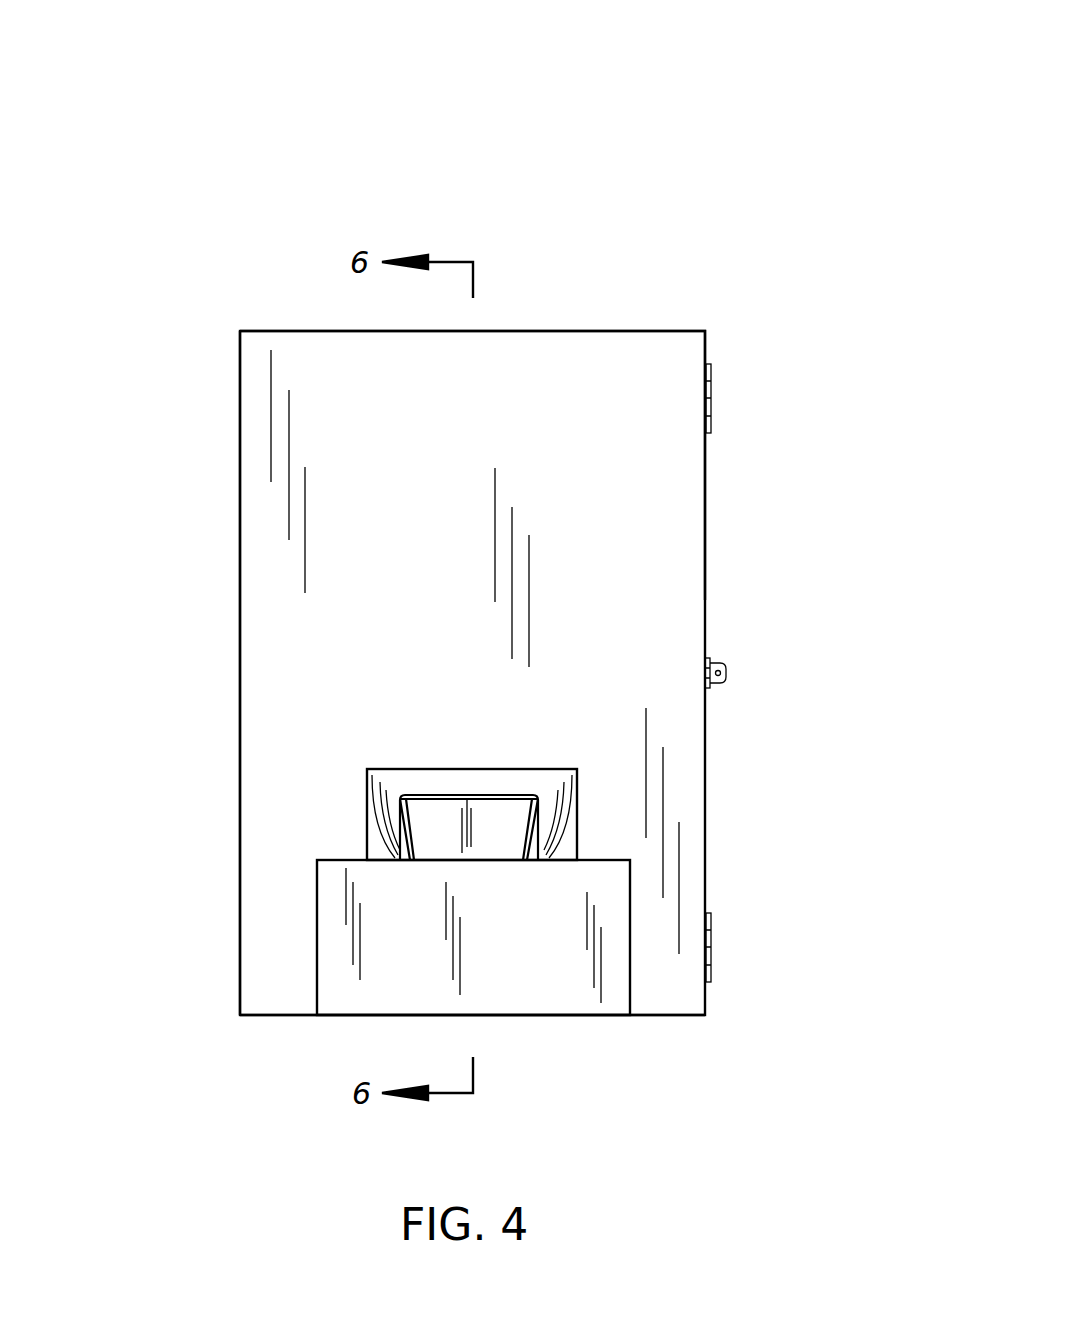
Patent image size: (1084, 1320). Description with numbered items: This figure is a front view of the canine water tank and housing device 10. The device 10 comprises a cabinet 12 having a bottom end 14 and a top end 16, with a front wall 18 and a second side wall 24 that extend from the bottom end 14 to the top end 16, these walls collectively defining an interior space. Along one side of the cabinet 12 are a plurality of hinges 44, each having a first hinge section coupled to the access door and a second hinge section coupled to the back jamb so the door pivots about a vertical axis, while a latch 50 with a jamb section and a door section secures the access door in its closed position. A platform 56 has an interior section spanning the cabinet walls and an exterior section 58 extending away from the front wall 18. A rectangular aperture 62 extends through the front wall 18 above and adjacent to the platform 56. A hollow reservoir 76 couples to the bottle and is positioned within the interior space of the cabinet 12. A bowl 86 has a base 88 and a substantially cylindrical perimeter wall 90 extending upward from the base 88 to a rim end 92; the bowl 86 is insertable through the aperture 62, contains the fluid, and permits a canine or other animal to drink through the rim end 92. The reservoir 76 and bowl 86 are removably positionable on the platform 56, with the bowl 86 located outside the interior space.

The canine water tank and housing device 10 is at (665, 78).
The cabinet 12 is at (685, 258).
The bottom end 14 is at (680, 1063).
The top end 16 is at (251, 250).
The front wall 18 is at (285, 467).
The second side wall 24 is at (183, 404).
The hinges 44 is at (757, 385).
The latch 50 is at (780, 655).
The platform 56 is at (573, 980).
The exterior section 58 is at (358, 992).
The rectangular aperture 62 is at (595, 832).
The reservoir 76 is at (547, 781).
The bowl 86 is at (423, 817).
The base 88 is at (472, 860).
The perimeter wall 90 is at (458, 817).
The rim end 92 is at (413, 795).